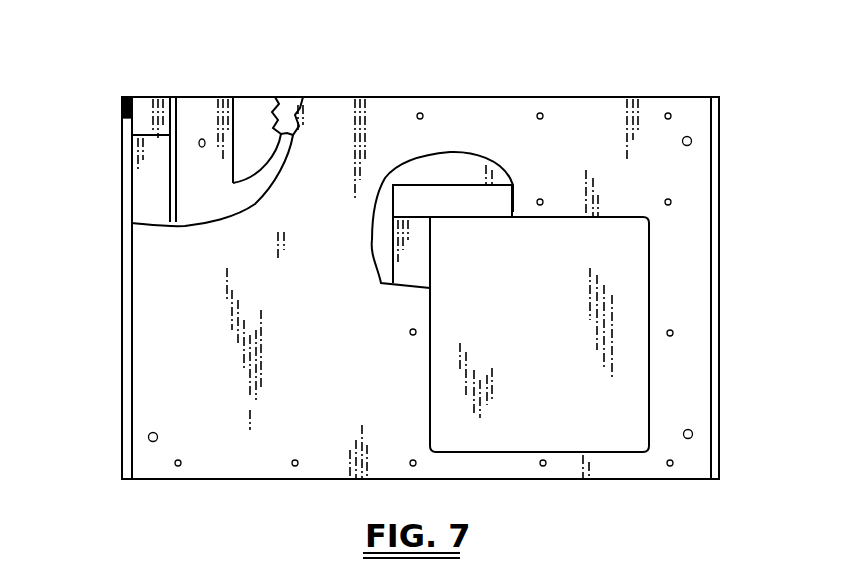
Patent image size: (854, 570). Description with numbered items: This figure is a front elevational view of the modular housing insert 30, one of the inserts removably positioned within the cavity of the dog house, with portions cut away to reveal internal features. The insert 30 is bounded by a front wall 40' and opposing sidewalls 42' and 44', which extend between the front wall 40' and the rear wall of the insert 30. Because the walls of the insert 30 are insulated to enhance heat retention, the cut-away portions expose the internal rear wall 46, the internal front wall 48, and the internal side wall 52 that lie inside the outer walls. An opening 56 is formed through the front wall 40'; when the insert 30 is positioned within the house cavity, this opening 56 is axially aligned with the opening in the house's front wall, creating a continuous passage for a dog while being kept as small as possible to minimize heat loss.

The modular housing insert 30 is at (742, 80).
The front wall 40' is at (402, 311).
The sidewall 42' is at (761, 288).
The sidewall 44' is at (75, 288).
The internal rear wall 46 is at (261, 108).
The internal front wall 48 is at (283, 158).
The internal side wall 52 is at (173, 170).
The opening 56 is at (607, 415).